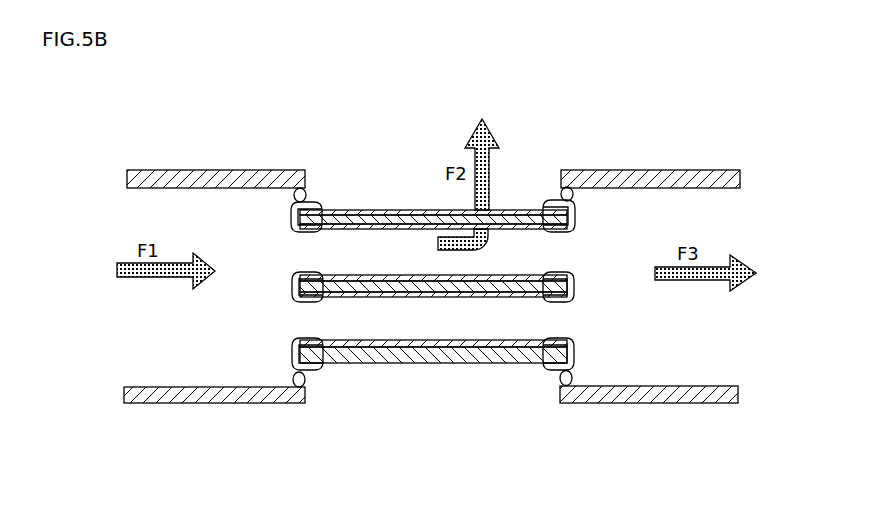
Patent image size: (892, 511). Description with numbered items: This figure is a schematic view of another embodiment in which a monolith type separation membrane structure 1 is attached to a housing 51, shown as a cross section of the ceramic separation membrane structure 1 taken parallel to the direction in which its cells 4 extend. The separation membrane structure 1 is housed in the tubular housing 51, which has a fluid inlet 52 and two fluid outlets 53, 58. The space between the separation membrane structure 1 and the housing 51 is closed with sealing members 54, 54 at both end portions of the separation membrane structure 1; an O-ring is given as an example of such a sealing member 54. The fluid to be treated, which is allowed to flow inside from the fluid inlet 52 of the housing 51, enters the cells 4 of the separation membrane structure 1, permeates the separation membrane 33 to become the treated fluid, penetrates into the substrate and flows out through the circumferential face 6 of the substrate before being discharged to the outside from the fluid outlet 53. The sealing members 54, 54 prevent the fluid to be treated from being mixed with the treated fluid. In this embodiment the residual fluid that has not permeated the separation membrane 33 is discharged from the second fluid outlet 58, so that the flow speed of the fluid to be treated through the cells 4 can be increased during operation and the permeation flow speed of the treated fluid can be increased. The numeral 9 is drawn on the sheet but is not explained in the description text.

The separation membrane structure 1 is at (433, 398).
The cells 4 is at (473, 317).
The circumferential face 6 is at (387, 210).
The core layer 9 is at (388, 356).
The separation membrane 33 is at (352, 347).
The housing 51 is at (651, 170).
The fluid inlet 52 is at (157, 337).
The fluid outlet 53 is at (537, 186).
The sealing member 54 is at (305, 384).
The fluid outlet 58 is at (712, 212).